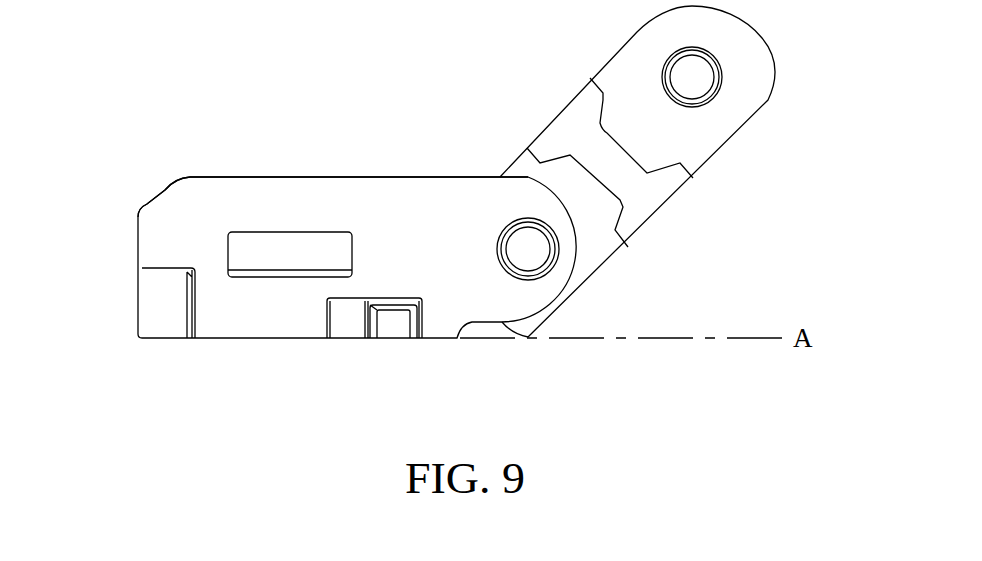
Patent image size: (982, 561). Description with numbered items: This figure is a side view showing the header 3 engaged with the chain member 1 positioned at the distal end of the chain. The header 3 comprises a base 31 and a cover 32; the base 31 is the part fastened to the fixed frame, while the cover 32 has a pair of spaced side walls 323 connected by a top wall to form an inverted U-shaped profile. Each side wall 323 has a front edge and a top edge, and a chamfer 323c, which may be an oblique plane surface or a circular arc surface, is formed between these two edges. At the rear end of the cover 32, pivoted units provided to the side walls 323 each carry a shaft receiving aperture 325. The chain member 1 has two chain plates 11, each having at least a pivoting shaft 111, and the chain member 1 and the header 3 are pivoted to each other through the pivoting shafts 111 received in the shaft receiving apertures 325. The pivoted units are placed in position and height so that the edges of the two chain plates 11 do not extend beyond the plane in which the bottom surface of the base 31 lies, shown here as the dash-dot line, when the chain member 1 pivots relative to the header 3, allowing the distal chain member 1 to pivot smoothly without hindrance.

The chain member 1 is at (610, 55).
The chain plate 11 is at (658, 197).
The pivoting shaft 111 is at (540, 257).
The header 3 is at (163, 169).
The base 31 is at (387, 327).
The cover 32 is at (218, 202).
The side wall 323 is at (387, 192).
The chamfer 323c is at (165, 190).
The shaft receiving aperture 325 is at (505, 227).